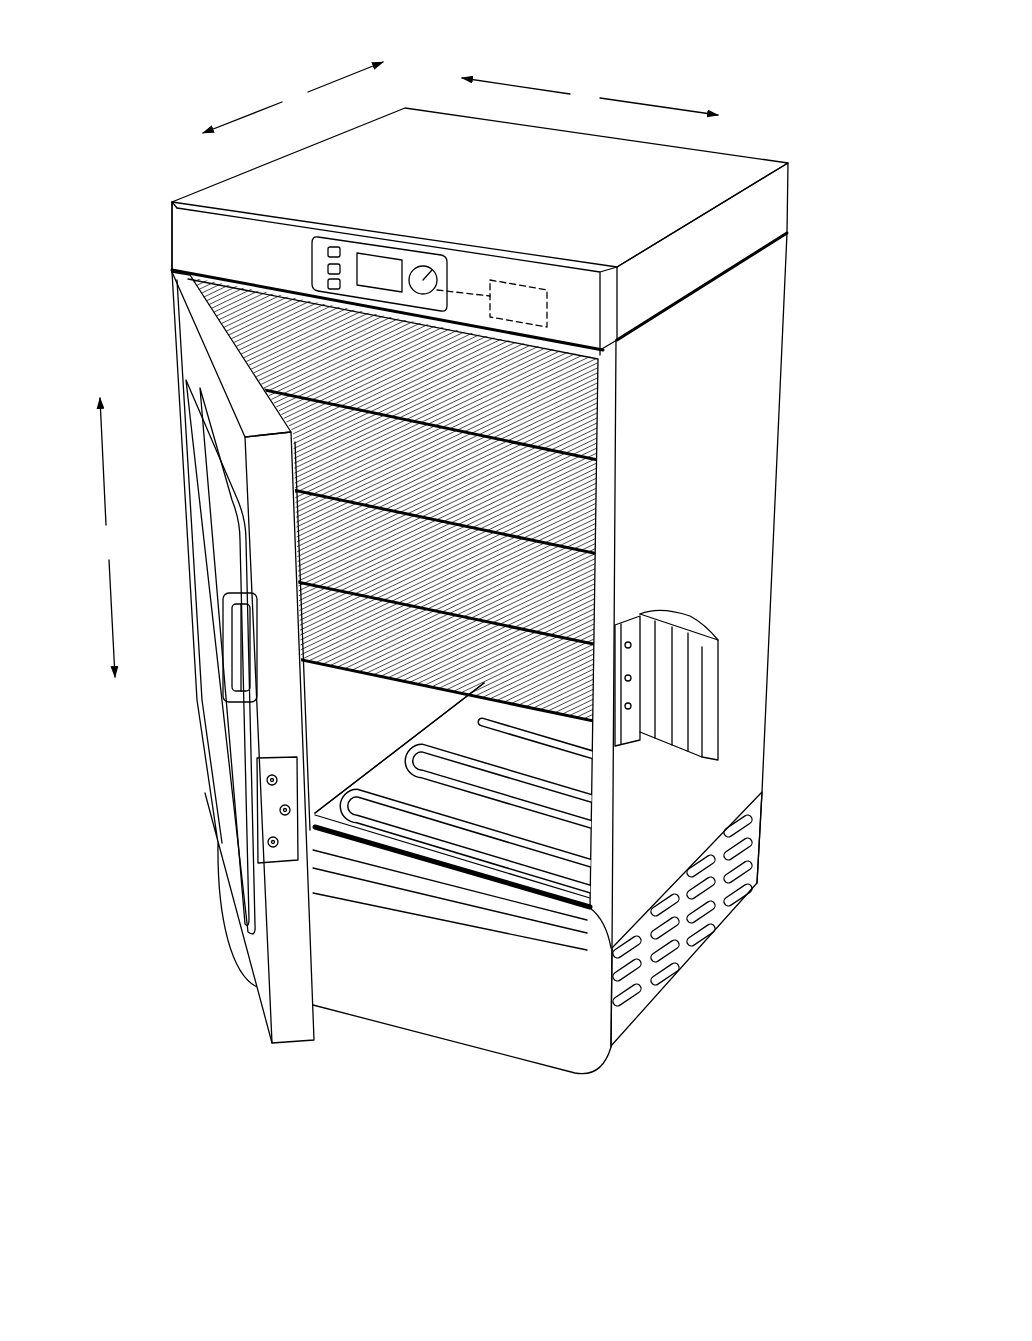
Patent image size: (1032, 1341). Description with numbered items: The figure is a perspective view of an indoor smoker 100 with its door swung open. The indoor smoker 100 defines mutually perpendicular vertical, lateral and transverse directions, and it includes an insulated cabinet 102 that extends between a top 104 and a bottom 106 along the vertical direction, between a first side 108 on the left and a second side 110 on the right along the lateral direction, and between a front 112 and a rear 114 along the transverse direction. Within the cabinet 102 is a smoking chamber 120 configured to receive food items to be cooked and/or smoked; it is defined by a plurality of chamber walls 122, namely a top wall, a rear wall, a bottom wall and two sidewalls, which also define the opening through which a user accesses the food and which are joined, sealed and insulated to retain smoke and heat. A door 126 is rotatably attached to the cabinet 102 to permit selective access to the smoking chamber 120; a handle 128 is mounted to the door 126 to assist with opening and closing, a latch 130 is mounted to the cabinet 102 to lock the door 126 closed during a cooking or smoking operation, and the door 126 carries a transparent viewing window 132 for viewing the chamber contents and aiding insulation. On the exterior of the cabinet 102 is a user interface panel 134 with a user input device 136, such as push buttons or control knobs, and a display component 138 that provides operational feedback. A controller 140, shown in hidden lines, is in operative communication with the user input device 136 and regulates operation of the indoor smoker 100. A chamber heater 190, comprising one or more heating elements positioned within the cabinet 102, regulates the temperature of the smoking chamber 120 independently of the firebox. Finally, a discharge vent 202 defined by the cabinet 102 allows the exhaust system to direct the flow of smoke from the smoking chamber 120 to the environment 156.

The indoor smoker 100 is at (792, 48).
The insulated cabinet 102 is at (752, 372).
The top 104 is at (714, 162).
The bottom 106 is at (480, 1066).
The first side 108 is at (168, 244).
The second side 110 is at (772, 528).
The front 112 is at (207, 238).
The rear 114 is at (800, 270).
The smoking chamber 120 is at (375, 728).
The chamber walls 122 is at (254, 320).
The door 126 is at (210, 322).
The handle 128 is at (226, 630).
The latch 130 is at (715, 662).
The transparent viewing window 132 is at (243, 795).
The user interface panel 134 is at (400, 228).
The user input device 136 is at (334, 247).
The display component 138 is at (392, 282).
The controller 140 is at (522, 282).
The environment 156 is at (134, 107).
The chamber heater 190 is at (520, 865).
The discharge vent 202 is at (665, 934).